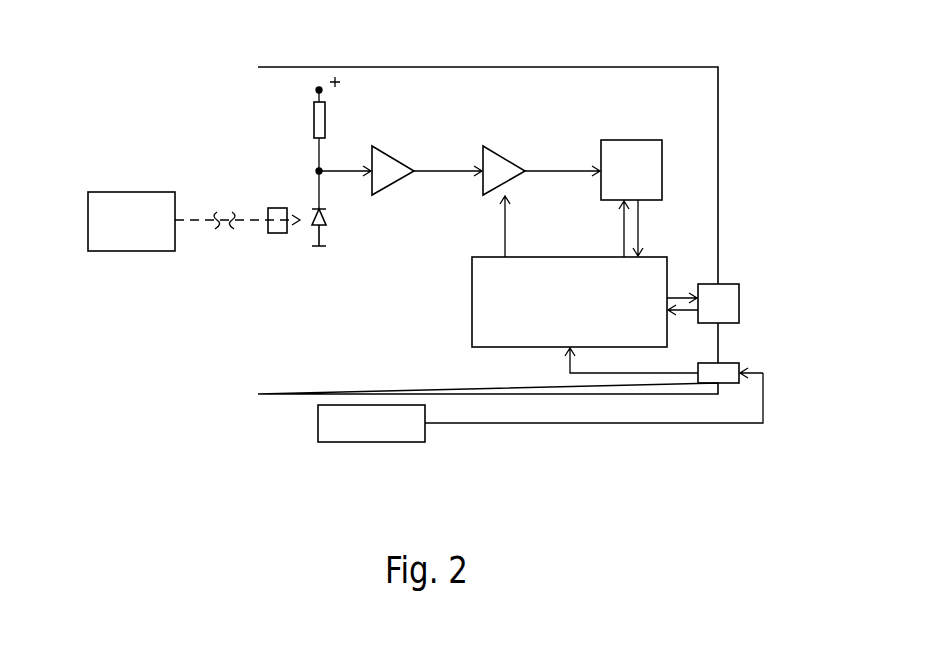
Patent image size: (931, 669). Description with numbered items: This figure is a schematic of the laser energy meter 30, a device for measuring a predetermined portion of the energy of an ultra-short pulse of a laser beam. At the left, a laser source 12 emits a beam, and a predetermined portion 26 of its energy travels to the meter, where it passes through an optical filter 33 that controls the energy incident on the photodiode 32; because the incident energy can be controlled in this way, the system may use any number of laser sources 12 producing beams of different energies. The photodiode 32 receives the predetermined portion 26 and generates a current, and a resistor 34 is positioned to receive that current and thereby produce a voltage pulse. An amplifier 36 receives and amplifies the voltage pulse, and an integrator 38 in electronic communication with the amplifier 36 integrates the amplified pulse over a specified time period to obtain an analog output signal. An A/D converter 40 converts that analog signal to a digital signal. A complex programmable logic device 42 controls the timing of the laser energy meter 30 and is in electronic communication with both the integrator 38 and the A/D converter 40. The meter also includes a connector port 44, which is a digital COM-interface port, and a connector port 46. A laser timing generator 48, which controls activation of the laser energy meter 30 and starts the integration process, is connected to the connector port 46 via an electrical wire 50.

The laser source 12 is at (107, 199).
The predetermined portion of the energy 26 is at (251, 224).
The laser energy meter 30 is at (706, 77).
The photodiode 32 is at (327, 223).
The optical filter 33 is at (277, 213).
The resistor 34 is at (320, 120).
The amplifier 36 is at (388, 165).
The integrator 38 is at (503, 167).
The A/D converter 40 is at (632, 148).
The complex programmable logic device 42 is at (481, 299).
The connector port 44 is at (727, 296).
The connector port 46 is at (728, 370).
The laser timing generator 48 is at (373, 430).
The electrical wire 50 is at (508, 424).